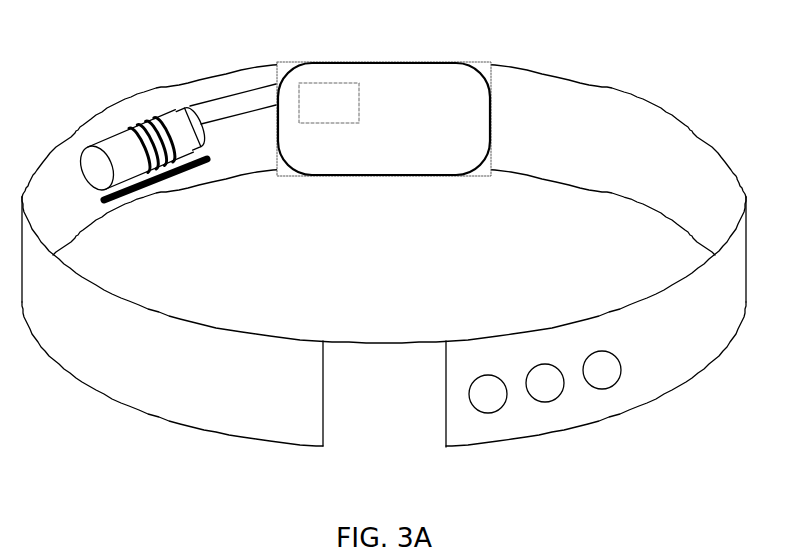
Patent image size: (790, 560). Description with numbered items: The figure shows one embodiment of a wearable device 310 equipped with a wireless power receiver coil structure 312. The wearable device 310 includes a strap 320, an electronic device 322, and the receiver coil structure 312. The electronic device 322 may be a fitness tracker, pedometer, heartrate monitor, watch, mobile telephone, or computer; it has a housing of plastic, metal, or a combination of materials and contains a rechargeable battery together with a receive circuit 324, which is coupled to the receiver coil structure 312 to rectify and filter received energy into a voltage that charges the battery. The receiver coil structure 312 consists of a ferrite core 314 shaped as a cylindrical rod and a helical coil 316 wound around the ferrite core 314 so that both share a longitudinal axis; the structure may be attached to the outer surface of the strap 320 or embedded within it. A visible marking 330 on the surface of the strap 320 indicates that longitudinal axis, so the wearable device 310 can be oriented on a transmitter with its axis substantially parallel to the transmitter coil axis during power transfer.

The wearable device 310 is at (384, 265).
The receiver coil structure 312 is at (154, 145).
The ferrite core 314 is at (86, 148).
The helical coil 316 is at (152, 115).
The strap 320 is at (197, 323).
The electronic device 322 is at (384, 97).
The receive circuit 324 is at (359, 117).
The visible marking 330 is at (166, 183).